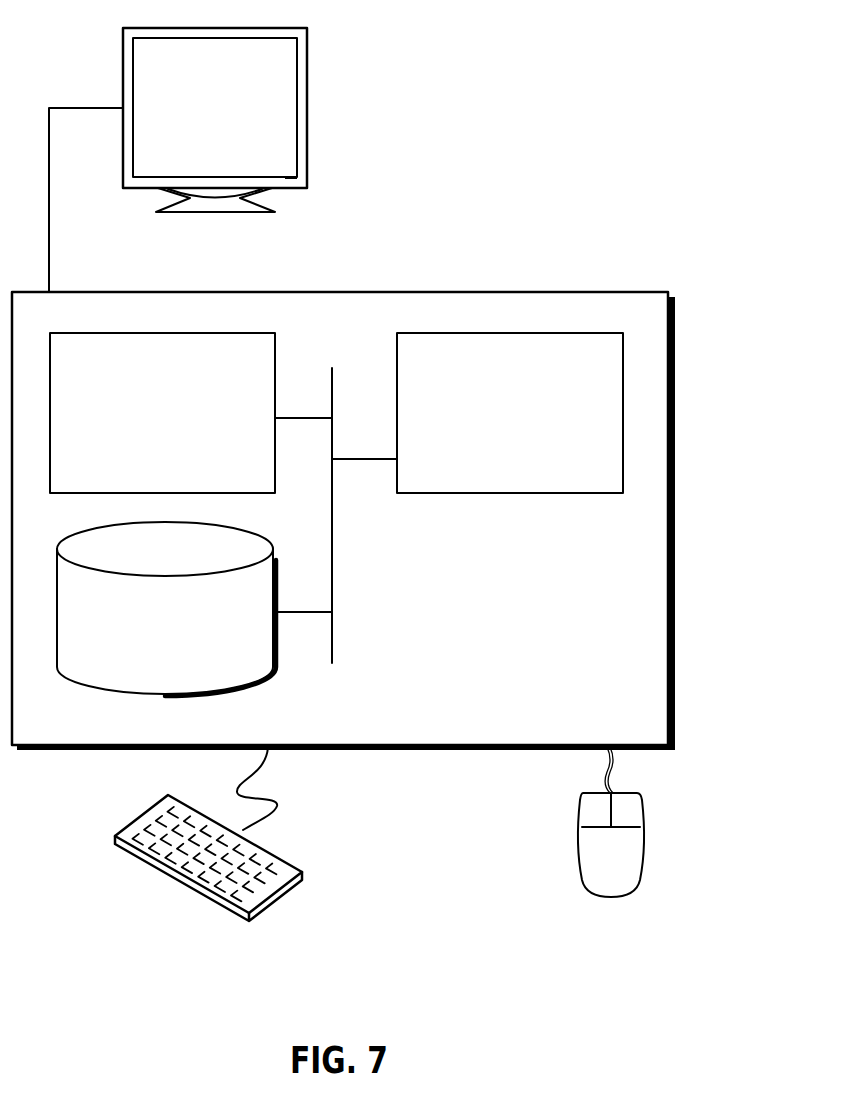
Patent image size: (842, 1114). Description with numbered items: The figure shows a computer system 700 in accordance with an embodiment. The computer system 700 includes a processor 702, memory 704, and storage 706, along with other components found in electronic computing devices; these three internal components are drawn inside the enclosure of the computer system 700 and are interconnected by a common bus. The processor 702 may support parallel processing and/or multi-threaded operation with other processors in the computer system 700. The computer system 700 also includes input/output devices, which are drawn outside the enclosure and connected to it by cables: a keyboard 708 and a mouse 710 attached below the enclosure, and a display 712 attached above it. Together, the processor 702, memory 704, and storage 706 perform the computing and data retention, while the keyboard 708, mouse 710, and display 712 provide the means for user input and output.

The computer system 700 is at (387, 258).
The processor 702 is at (491, 425).
The memory 704 is at (142, 425).
The storage 706 is at (147, 637).
The keyboard 708 is at (132, 855).
The mouse 710 is at (590, 868).
The display 712 is at (178, 160).